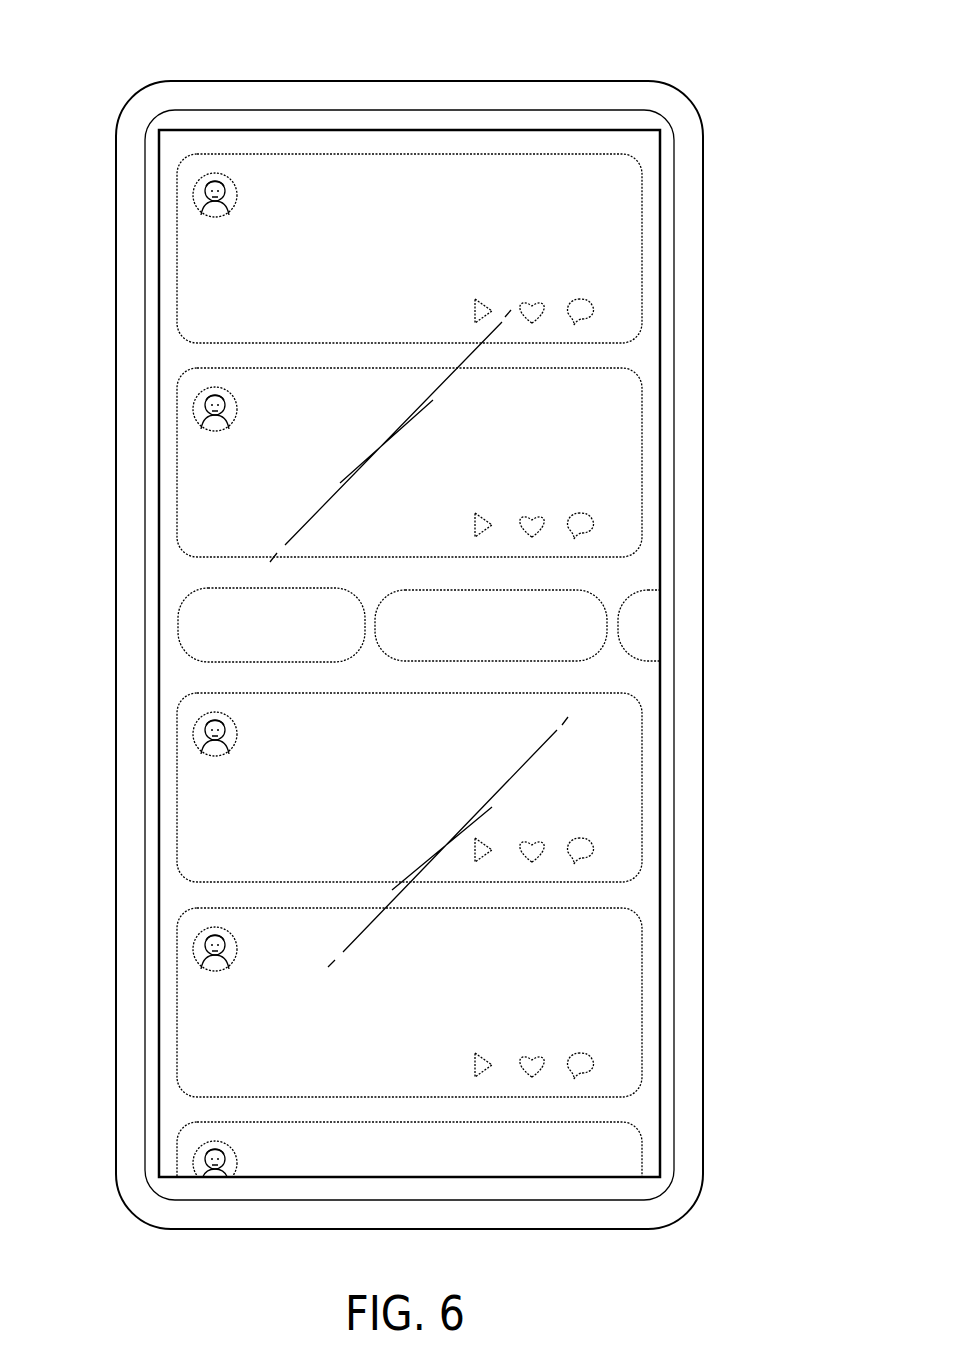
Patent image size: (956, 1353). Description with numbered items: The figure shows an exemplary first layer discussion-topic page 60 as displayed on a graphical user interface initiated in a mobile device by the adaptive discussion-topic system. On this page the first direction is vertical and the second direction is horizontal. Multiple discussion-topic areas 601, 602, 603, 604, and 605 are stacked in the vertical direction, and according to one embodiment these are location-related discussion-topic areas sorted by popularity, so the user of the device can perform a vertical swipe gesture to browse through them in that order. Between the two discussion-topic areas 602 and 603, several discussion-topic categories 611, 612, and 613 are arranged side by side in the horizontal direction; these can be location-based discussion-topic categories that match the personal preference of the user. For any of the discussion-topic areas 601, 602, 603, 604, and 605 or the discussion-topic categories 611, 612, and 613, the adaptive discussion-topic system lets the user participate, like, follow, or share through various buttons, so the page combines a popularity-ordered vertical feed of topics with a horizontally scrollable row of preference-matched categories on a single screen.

The first layer discussion-topic page 60 is at (717, 62).
The discussion-topic area 601 is at (638, 248).
The discussion-topic area 602 is at (630, 462).
The discussion-topic area 603 is at (630, 787).
The discussion-topic area 604 is at (630, 1002).
The discussion-topic area 605 is at (630, 1157).
The discussion-topic category 611 is at (177, 627).
The discussion-topic category 612 is at (577, 607).
The discussion-topic category 613 is at (647, 625).